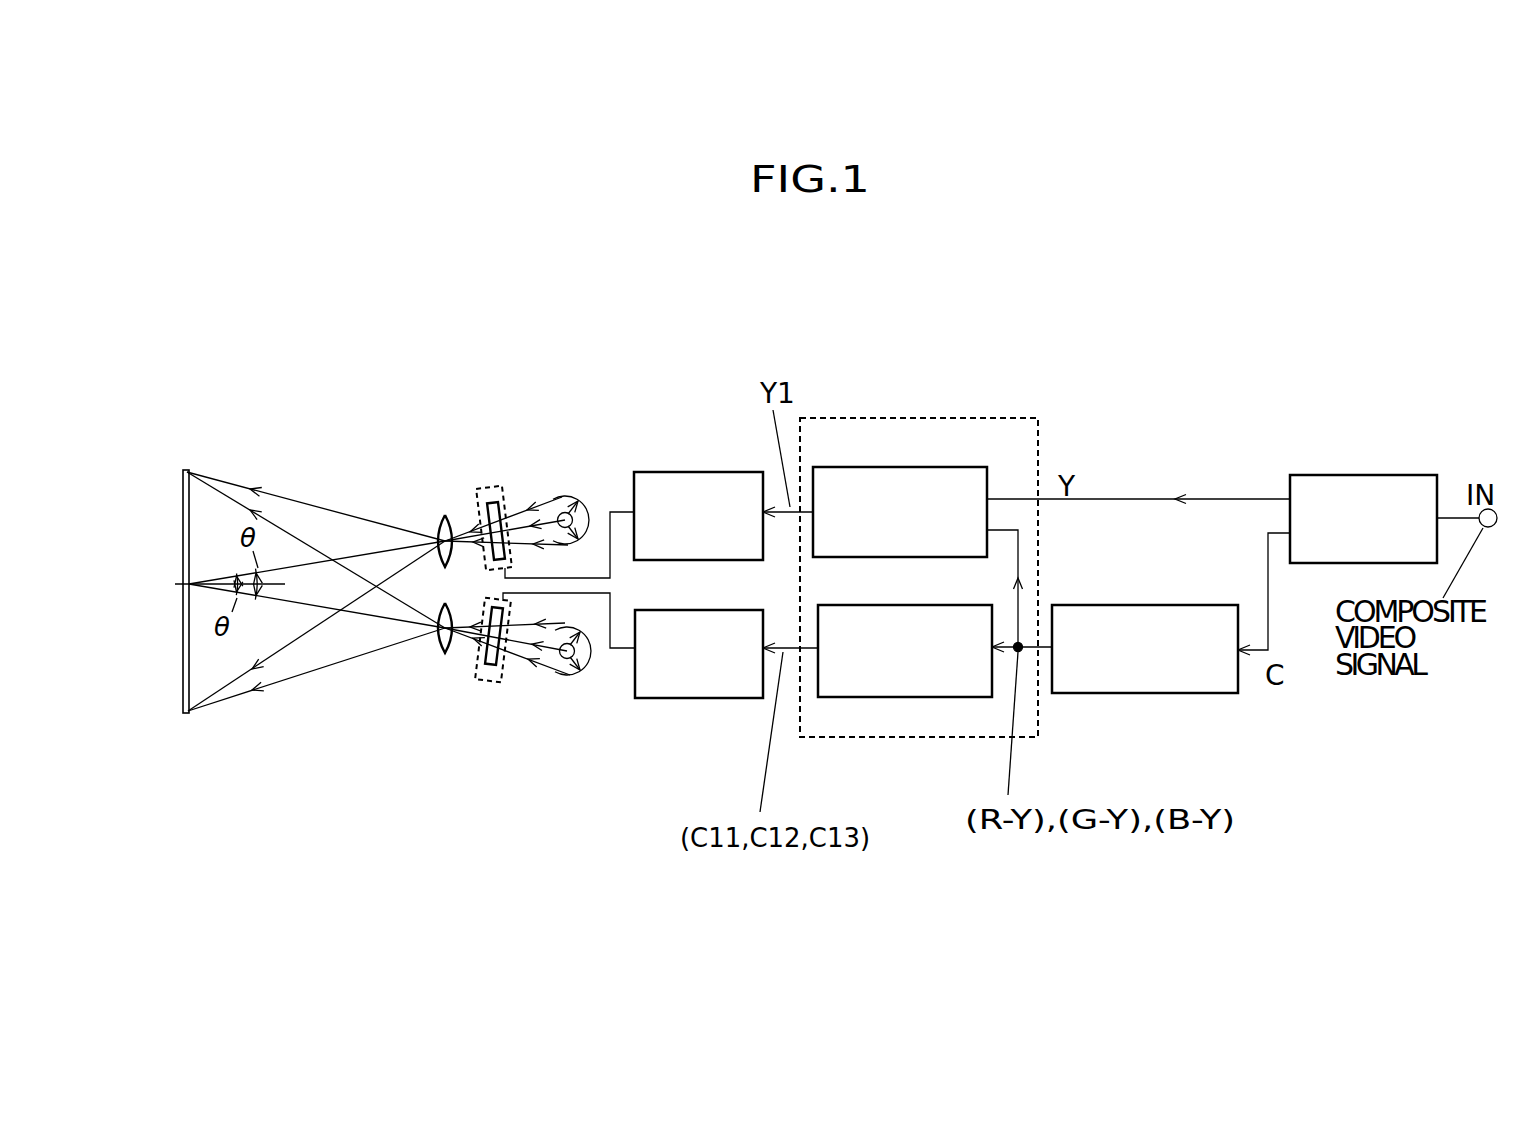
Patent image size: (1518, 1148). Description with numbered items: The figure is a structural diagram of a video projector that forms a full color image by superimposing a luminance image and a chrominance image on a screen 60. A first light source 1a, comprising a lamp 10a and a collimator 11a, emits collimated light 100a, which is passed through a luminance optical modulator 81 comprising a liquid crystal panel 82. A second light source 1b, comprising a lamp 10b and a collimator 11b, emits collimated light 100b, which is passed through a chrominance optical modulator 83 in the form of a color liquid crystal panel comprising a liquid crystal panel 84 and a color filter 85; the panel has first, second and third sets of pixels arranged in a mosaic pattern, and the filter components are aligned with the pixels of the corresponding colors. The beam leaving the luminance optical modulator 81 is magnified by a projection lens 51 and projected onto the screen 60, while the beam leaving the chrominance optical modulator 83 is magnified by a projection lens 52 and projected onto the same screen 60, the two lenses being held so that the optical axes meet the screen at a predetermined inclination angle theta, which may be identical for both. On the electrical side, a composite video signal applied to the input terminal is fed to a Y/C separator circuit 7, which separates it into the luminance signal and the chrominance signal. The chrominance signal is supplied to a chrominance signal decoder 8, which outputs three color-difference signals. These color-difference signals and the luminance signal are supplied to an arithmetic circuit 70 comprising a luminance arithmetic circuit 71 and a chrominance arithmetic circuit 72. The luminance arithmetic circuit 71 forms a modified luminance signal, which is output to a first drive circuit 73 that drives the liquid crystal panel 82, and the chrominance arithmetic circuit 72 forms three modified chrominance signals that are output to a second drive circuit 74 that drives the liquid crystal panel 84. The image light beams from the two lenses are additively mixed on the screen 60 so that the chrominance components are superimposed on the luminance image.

The screen 60 is at (184, 470).
The projection lens 51 is at (438, 537).
The projection lens 52 is at (437, 636).
The luminance optical modulator 81 is at (487, 493).
The liquid crystal panel 82 is at (477, 497).
The chrominance optical modulator 83 is at (472, 665).
The liquid crystal panel 84 is at (481, 664).
The color filter 85 is at (476, 665).
The collimated light 100a is at (548, 503).
The collimated light 100b is at (506, 672).
The first light source 1a is at (611, 446).
The second light source 1b is at (572, 709).
The lamp 10a is at (575, 515).
The lamp 10b is at (562, 659).
The collimator 11a is at (580, 470).
The collimator 11b is at (592, 662).
The first drive circuit 73 is at (718, 471).
The second drive circuit 74 is at (708, 700).
The arithmetic circuit 70 is at (1081, 583).
The luminance arithmetic circuit 71 is at (905, 466).
The chrominance arithmetic circuit 72 is at (915, 698).
The chrominance signal decoder 8 is at (1147, 700).
The Y/C separator circuit 7 is at (1403, 474).